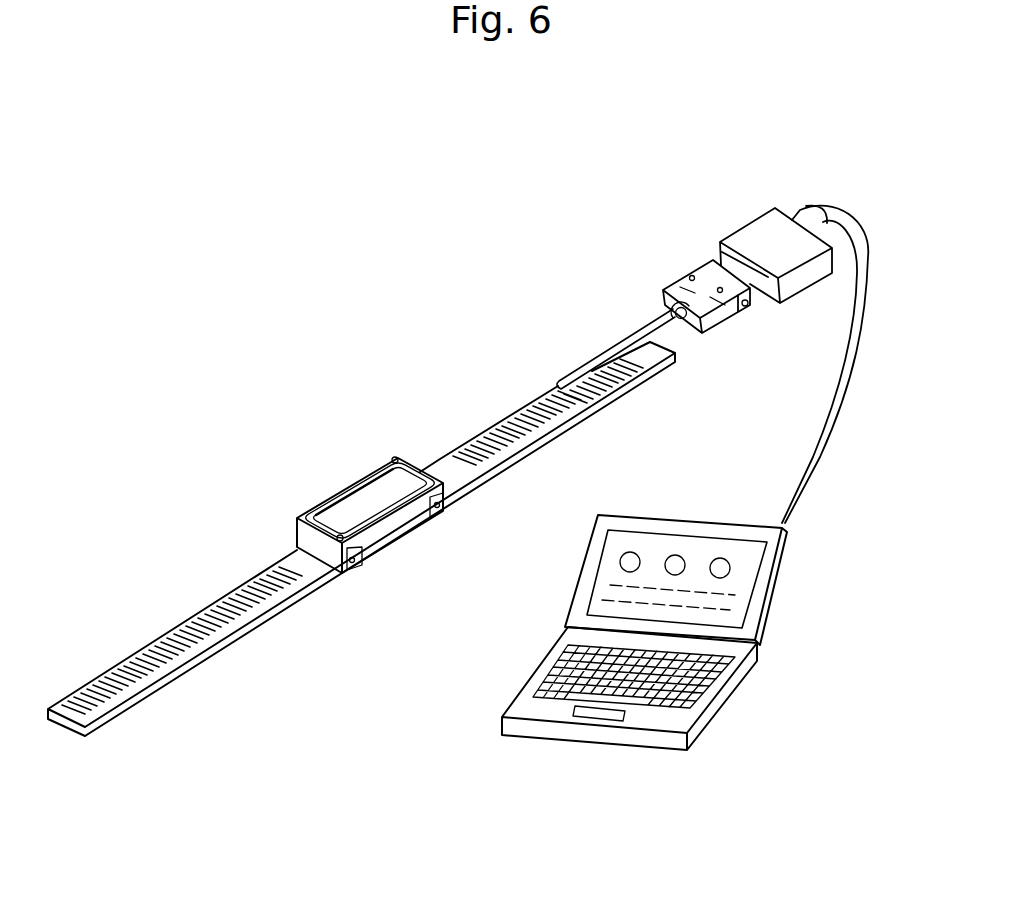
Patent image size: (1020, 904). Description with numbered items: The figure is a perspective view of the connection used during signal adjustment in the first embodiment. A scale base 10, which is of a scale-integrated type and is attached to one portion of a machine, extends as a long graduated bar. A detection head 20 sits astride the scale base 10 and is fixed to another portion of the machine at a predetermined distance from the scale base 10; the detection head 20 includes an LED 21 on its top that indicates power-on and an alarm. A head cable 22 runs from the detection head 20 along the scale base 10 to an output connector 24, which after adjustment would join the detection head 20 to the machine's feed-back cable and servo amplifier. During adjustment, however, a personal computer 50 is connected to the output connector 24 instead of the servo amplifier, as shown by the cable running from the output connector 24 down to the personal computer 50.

The scale base 10 is at (530, 452).
The detection head 20 is at (352, 484).
The LED 21 is at (330, 508).
The head cable 22 is at (527, 407).
The output connector 24 is at (680, 281).
The personal computer 50 is at (698, 721).